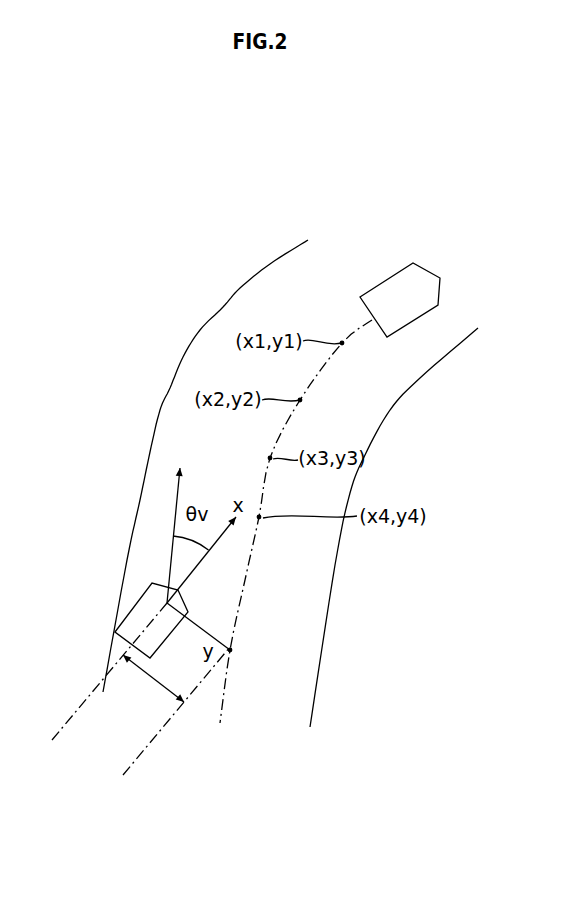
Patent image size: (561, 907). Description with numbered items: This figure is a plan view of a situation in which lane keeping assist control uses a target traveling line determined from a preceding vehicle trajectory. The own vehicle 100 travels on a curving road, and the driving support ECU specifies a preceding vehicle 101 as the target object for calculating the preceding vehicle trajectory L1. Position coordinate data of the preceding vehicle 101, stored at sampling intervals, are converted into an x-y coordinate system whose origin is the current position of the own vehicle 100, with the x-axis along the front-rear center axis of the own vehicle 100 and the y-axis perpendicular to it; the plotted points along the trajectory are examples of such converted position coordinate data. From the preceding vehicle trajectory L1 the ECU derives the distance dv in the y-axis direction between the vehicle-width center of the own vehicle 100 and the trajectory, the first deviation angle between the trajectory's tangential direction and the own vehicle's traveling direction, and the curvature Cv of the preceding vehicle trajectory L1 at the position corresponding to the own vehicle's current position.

The own vehicle 100 is at (115, 628).
The preceding vehicle 101 is at (388, 278).
The preceding vehicle trajectory L1 is at (288, 425).
The curvature of the preceding vehicle trajectory Cv is at (270, 456).
The distance in the y-axis direction dv is at (153, 678).